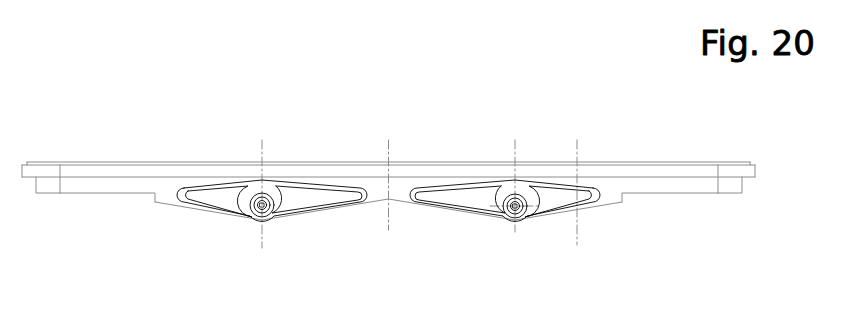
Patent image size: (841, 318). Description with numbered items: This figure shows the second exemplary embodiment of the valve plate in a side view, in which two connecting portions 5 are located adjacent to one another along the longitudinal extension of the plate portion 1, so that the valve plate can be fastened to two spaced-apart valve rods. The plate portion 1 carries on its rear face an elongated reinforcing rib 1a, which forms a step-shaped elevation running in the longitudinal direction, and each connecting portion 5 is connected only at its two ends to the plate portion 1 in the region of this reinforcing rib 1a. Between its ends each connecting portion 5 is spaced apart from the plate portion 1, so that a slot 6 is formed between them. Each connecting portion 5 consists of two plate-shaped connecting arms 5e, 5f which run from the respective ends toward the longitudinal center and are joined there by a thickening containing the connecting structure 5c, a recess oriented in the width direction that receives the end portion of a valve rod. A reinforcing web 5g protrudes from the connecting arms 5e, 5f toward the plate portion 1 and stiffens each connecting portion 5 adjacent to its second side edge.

The plate portion 1 is at (692, 197).
The reinforcing rib 1a is at (730, 187).
The connecting portion 5 is at (389, 248).
The connecting structure 5c is at (261, 208).
The connecting arm 5e is at (193, 210).
The connecting arm 5f is at (305, 213).
The reinforcing web 5g is at (388, 122).
The slot 6 is at (330, 192).